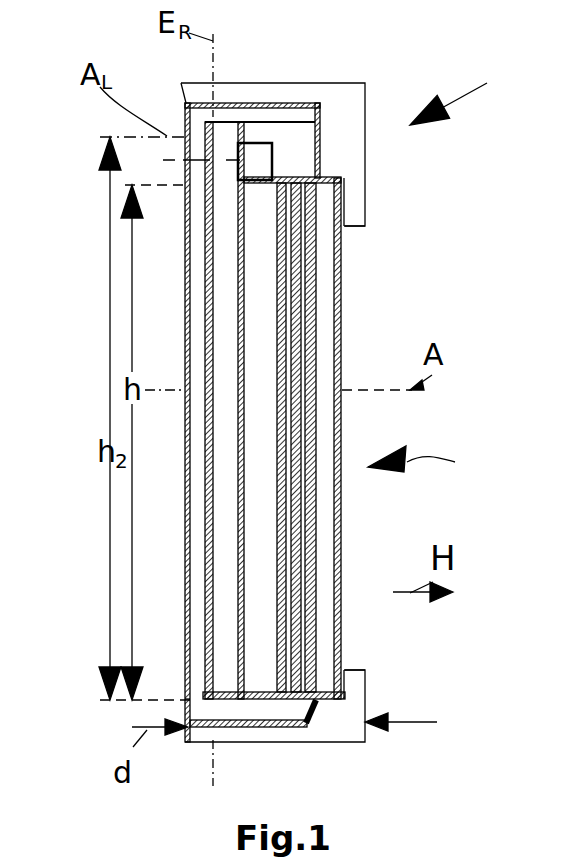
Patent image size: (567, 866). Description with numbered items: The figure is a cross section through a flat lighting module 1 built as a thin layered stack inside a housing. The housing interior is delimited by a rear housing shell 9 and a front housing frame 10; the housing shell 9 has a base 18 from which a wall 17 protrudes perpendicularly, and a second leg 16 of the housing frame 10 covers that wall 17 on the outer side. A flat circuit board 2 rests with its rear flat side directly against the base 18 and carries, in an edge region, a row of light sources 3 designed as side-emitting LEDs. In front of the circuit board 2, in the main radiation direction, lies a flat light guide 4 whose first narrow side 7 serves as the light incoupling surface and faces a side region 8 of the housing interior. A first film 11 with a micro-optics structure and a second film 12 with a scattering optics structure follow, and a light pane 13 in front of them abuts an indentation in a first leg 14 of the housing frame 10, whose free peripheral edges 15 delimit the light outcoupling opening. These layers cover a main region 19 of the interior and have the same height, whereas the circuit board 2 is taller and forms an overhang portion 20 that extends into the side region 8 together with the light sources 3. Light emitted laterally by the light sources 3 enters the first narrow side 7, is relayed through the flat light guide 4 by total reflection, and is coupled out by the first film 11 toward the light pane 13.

The flat lighting module 1 is at (465, 87).
The flat circuit board 2 is at (223, 270).
The light sources 3 is at (298, 110).
The flat light guide 4 is at (258, 572).
The first narrow side 7 is at (283, 167).
The side region 8 is at (322, 141).
The rear housing shell 9 is at (195, 497).
The front housing frame 10 is at (352, 710).
The first film 11 is at (285, 305).
The second film 12 is at (300, 347).
The light pane 13 is at (330, 560).
The first leg 14 is at (355, 190).
The free peripheral edges 15 is at (357, 227).
The second leg 16 is at (255, 87).
The wall 17 is at (251, 146).
The base 18 is at (188, 655).
The main region 19 is at (436, 468).
The overhang portion 20 is at (172, 160).